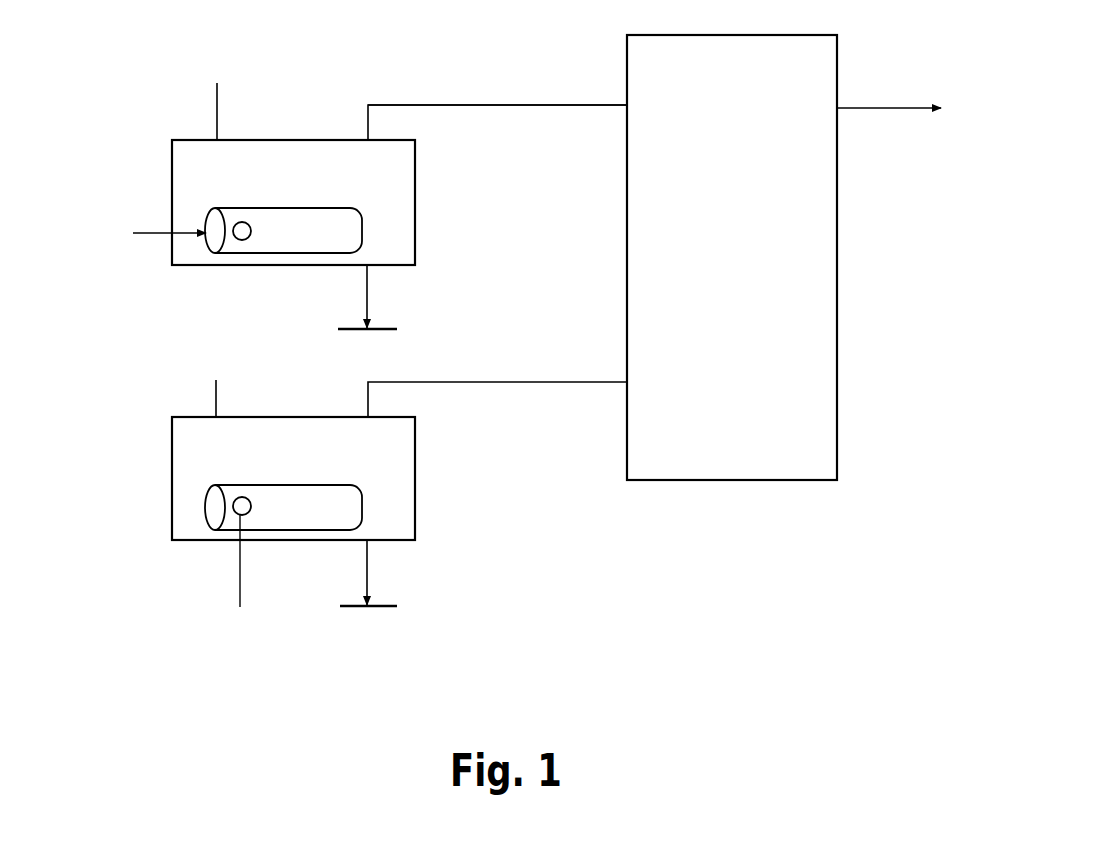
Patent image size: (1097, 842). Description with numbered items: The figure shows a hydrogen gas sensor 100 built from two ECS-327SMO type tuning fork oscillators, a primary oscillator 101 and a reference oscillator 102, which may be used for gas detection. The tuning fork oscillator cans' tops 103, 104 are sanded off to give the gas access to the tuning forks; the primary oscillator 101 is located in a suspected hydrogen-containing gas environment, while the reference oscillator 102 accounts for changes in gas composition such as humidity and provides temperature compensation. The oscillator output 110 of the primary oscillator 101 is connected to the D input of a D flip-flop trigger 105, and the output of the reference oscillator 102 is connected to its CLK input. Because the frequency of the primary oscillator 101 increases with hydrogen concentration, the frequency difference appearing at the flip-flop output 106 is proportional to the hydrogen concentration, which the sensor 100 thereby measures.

The sensor 100 is at (488, 361).
The primary oscillator 101 is at (418, 217).
The reference oscillator 102 is at (418, 495).
The tuning fork oscillator can top 103 is at (206, 262).
The tuning fork oscillator can top 104 is at (210, 530).
The D flip-flop trigger 105 is at (722, 483).
The flip-flop output 106 is at (909, 103).
The oscillator output 110 is at (515, 103).